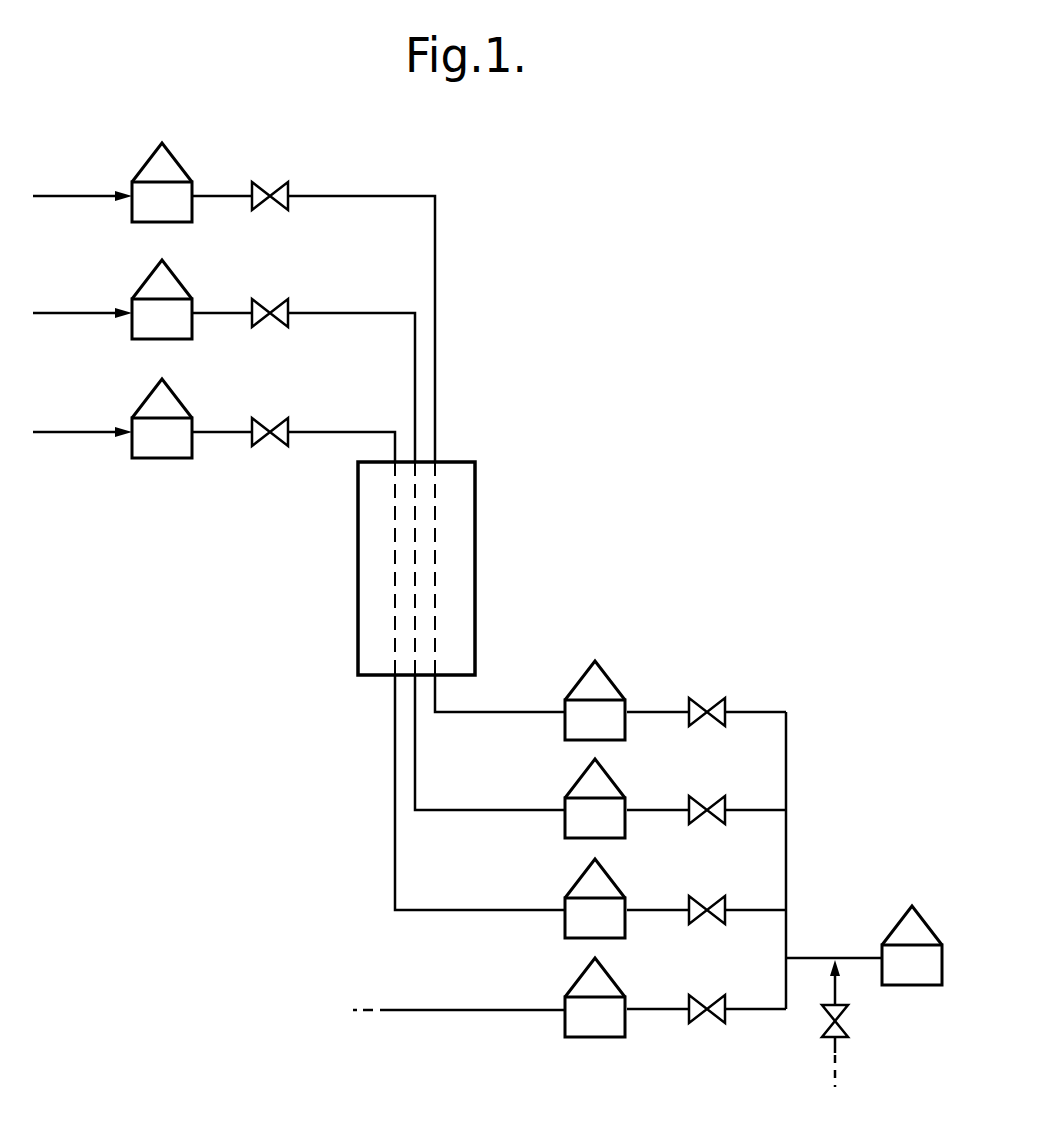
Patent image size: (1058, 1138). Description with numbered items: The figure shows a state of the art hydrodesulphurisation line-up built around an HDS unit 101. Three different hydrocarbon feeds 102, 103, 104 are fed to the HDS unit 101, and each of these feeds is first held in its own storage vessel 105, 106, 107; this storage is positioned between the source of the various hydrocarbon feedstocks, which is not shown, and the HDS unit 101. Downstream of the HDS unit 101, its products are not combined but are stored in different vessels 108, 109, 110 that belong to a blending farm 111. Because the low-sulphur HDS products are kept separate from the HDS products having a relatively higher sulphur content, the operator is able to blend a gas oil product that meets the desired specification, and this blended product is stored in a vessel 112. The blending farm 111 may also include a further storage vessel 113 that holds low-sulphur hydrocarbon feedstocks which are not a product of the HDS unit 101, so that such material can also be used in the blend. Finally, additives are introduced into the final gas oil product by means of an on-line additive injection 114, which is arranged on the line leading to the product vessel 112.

The HDS unit 101 is at (382, 585).
The feed 102 is at (362, 192).
The feed 103 is at (348, 310).
The feed 104 is at (338, 430).
The storage vessel 105 is at (155, 191).
The storage vessel 106 is at (162, 311).
The storage vessel 107 is at (160, 427).
The vessel 108 is at (577, 725).
The vessel 109 is at (575, 825).
The vessel 110 is at (578, 920).
The blending farm 111 is at (655, 668).
The vessel 112 is at (917, 972).
The storage vessel 113 is at (580, 1023).
The on-line additive injection 114 is at (833, 1053).